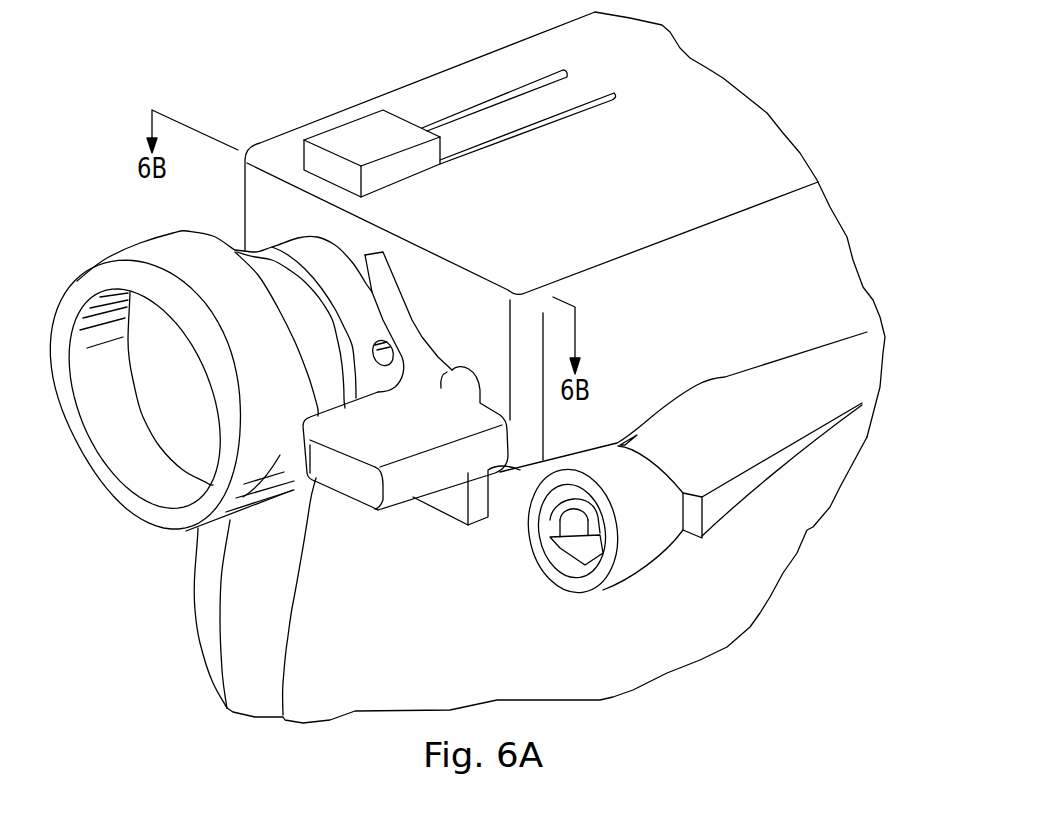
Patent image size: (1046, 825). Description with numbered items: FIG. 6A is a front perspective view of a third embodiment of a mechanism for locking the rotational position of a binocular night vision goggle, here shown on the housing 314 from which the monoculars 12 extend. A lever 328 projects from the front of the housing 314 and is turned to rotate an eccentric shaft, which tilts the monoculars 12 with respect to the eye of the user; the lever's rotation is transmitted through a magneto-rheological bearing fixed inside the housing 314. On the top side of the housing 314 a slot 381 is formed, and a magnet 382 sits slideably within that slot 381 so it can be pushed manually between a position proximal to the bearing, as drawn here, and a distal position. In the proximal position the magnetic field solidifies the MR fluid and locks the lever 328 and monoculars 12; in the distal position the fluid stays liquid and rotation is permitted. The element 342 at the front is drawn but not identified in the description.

The monoculars 12 is at (197, 583).
The housing 314 is at (787, 140).
The lever 328 is at (338, 494).
The collar 342 is at (78, 283).
The slot 381 is at (492, 100).
The magnet 382 is at (347, 130).